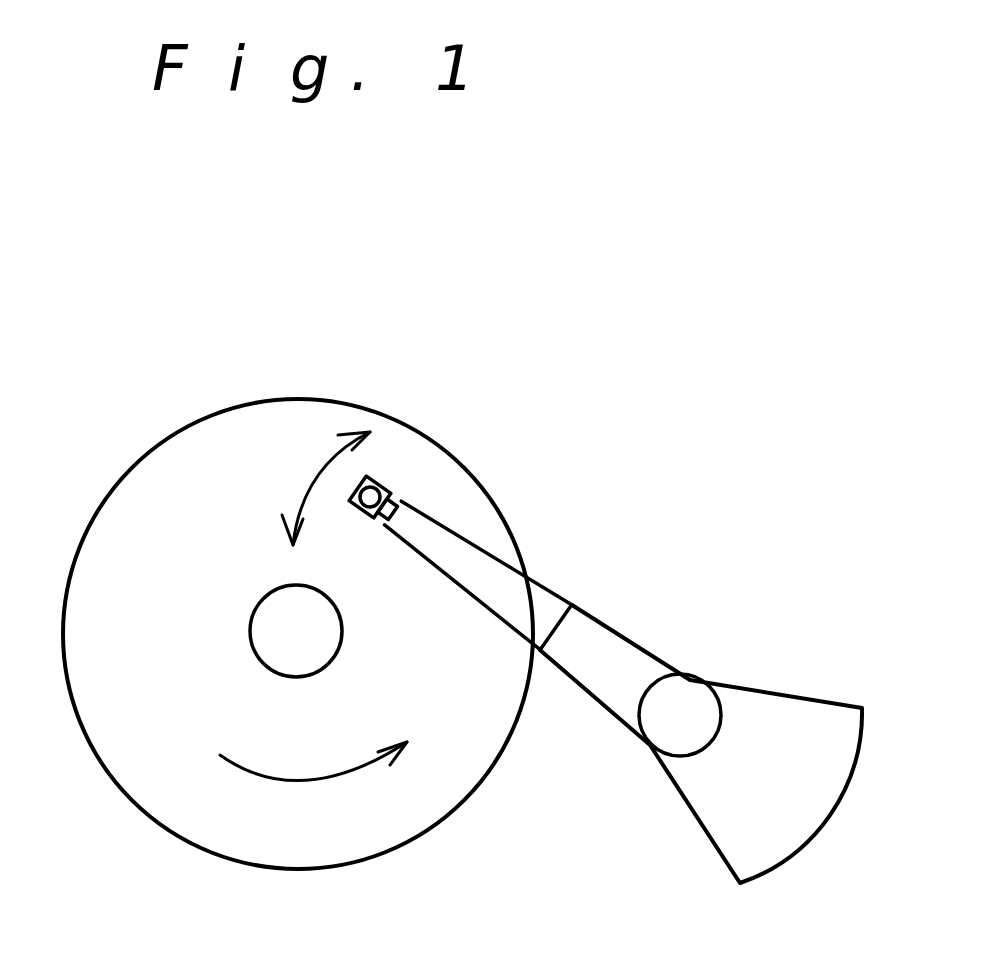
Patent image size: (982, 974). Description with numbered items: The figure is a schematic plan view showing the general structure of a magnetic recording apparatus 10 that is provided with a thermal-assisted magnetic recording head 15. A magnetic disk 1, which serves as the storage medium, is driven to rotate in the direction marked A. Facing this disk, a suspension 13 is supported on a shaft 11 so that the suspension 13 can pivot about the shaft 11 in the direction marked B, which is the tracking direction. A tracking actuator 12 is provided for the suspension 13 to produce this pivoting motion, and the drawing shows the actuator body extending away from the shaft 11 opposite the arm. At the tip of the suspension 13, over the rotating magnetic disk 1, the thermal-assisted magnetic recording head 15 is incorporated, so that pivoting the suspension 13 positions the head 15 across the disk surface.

The magnetic recording apparatus 10 is at (823, 528).
The magnetic disk 1 is at (98, 762).
The shaft 11 is at (667, 732).
The tracking actuator 12 is at (730, 828).
The suspension 13 is at (465, 542).
The thermal-assisted magnetic recording head 15 is at (383, 478).